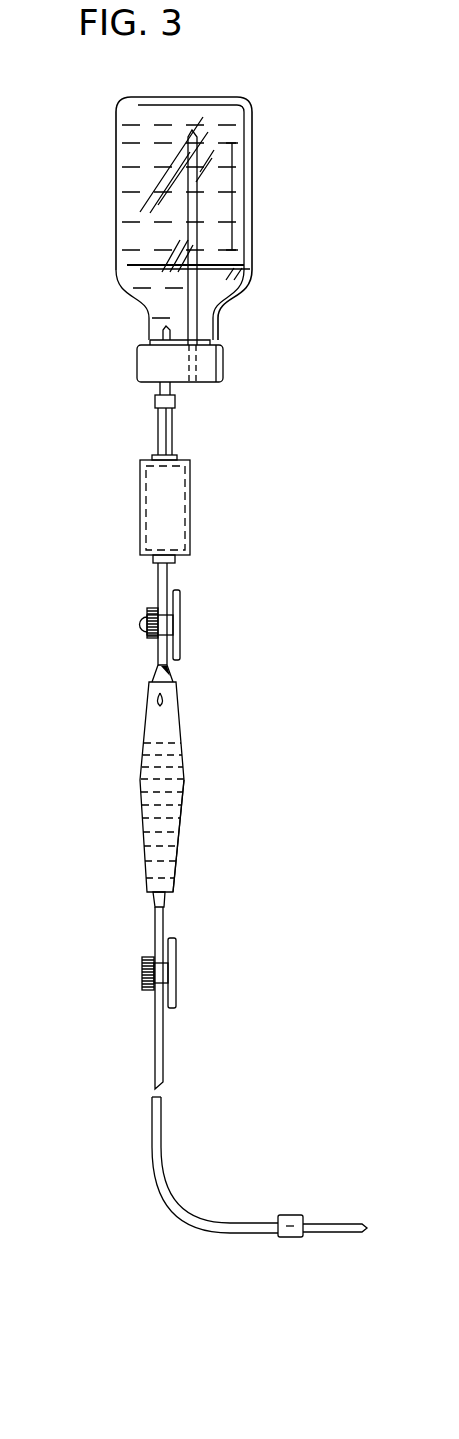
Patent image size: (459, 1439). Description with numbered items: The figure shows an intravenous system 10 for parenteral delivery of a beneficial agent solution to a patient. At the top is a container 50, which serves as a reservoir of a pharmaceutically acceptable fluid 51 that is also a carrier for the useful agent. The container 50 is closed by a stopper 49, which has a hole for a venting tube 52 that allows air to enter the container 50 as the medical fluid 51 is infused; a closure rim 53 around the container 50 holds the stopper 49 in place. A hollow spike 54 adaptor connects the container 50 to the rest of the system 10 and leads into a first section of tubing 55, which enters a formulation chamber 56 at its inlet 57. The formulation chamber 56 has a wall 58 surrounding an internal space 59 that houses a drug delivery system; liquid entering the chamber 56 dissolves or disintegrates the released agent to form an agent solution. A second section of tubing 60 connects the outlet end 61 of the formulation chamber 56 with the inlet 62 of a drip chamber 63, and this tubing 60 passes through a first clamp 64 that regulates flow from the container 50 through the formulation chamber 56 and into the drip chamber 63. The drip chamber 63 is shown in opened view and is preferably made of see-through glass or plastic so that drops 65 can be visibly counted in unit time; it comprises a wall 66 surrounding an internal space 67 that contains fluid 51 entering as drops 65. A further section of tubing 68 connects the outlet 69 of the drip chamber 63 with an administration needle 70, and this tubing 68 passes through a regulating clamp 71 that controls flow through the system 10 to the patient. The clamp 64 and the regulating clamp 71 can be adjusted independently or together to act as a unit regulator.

The intravenous system 10 is at (268, 153).
The stopper 49 is at (150, 338).
The container 50 is at (117, 148).
The pharmaceutically acceptable fluid 51 is at (126, 220).
The venting tube 52 is at (197, 244).
The closure rim 53 is at (224, 360).
The hollow spike 54 is at (158, 390).
The first section of tubing 55 is at (157, 425).
The formulation chamber 56 is at (140, 486).
The inlet 57 is at (178, 458).
The wall 58 is at (146, 505).
The internal space 59 is at (164, 526).
The second section of tubing 60 is at (158, 572).
The outlet end 61 is at (175, 561).
The inlet 62 is at (152, 672).
The drip chamber 63 is at (183, 772).
The first clamp 64 is at (143, 633).
The drops 65 is at (172, 696).
The wall 66 is at (183, 815).
The internal space 67 is at (168, 733).
The second section of tubing 68 is at (165, 920).
The outlet 69 is at (153, 897).
The administration needle 70 is at (331, 1222).
The regulating clamp 71 is at (177, 983).